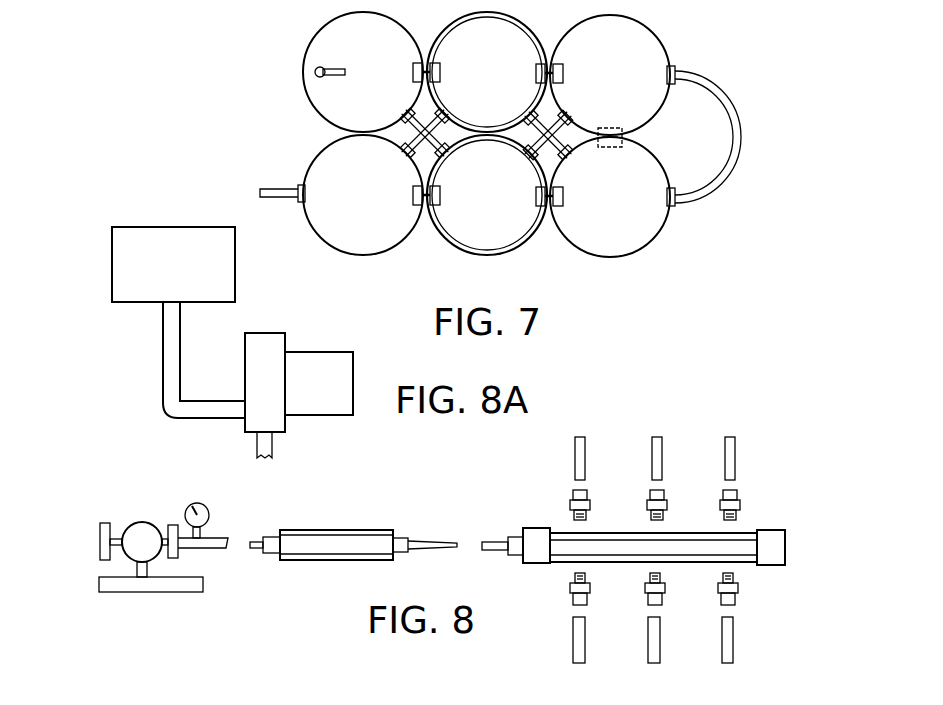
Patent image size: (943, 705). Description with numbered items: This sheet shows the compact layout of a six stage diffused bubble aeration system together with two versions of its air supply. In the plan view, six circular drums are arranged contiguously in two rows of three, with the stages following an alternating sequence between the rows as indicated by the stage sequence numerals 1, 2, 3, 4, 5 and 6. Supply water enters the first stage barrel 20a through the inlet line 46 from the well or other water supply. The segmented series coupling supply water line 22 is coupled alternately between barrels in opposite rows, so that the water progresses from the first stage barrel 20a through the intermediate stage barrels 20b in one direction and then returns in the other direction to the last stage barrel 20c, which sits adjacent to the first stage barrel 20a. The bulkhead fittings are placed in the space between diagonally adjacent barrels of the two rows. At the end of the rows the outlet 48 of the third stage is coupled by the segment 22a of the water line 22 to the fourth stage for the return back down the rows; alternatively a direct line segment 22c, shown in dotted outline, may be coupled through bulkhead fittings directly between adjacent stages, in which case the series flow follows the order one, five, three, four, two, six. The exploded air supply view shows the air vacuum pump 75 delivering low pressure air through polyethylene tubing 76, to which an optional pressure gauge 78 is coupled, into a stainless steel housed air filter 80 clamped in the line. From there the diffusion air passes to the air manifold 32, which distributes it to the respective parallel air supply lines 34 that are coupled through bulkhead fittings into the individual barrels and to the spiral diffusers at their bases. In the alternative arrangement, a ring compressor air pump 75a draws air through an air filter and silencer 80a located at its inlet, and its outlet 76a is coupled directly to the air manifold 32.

In FIG. 7, the stage sequence numeral 1 is at (371, 207).
In FIG. 7, the stage sequence numeral 2 is at (496, 100).
In FIG. 7, the stage sequence numeral 3 is at (618, 209).
In FIG. 7, the stage sequence numeral 4 is at (618, 88).
In FIG. 7, the stage sequence numeral 5 is at (494, 207).
In FIG. 7, the stage sequence numeral 6 is at (378, 84).
In FIG. 7, the first stage barrel 20a is at (348, 252).
In FIG. 7, the intermediate stage barrels 20b is at (523, 33).
In FIG. 7, the last stage barrel 20c is at (312, 37).
In FIG. 7, the series coupling supply water line 22 is at (623, 138).
In FIG. 7, the segment of water supply line 22a is at (736, 170).
In FIG. 7, the direct line segment 22c is at (403, 62).
In FIG. 7, the inlet line 46 is at (273, 188).
In FIG. 7, the outlet 48 is at (675, 207).
In FIG. 8A, the air filter and silencer 80a is at (193, 227).
In FIG. 8A, the ring compressor air pump 75a is at (300, 341).
In FIG. 8A, the outlet 76a is at (272, 447).
In FIG. 8, the air vacuum pump 75 is at (146, 522).
In FIG. 8, the polyethylene tubing 76 is at (228, 537).
In FIG. 8, the pressure gauge 78 is at (198, 503).
In FIG. 8, the air filter 80 is at (335, 528).
In FIG. 8, the air manifold 32 is at (596, 535).
In FIG. 8, the air supply lines 34 is at (573, 468).